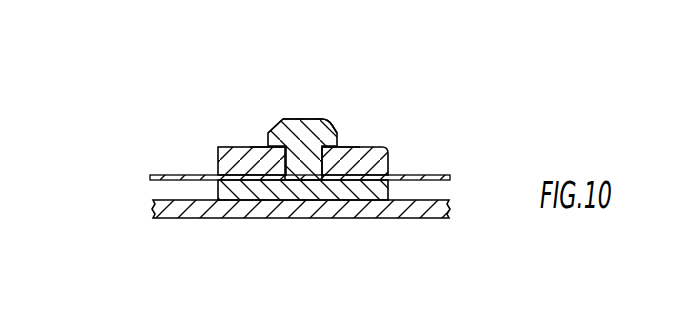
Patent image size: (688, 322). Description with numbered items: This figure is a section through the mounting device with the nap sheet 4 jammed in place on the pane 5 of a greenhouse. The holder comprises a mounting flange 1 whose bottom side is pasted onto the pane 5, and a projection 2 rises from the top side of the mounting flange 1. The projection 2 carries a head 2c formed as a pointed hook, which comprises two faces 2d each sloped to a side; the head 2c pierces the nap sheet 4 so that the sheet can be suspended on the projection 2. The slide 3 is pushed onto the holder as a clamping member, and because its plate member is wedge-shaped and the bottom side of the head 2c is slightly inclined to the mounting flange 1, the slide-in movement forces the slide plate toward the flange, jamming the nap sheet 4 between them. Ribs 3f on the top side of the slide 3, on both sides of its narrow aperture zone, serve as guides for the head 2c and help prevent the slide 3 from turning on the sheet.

The mounting flange 1 is at (240, 190).
The projection 2 is at (313, 160).
The head 2c is at (308, 118).
The faces 2d is at (273, 137).
The slide 3 is at (240, 162).
The ribs 3f is at (405, 63).
The nap sheet 4 is at (153, 178).
The base plate 5 is at (401, 207).